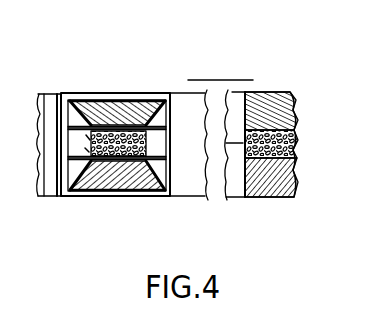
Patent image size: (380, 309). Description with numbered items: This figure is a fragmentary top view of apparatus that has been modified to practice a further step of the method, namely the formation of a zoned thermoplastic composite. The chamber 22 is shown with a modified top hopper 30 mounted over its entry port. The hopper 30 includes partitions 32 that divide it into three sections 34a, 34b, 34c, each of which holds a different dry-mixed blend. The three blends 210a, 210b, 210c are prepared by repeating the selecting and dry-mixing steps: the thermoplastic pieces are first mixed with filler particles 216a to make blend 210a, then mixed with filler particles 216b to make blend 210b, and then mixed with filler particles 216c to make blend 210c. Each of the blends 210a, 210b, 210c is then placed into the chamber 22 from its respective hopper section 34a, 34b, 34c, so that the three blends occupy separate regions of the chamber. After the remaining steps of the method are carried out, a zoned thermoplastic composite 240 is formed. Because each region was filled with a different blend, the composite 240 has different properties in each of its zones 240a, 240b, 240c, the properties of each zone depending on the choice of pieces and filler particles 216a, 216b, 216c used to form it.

The chamber 22 is at (303, 144).
The top hopper 30 is at (75, 201).
The partitions 32 is at (62, 130).
The hopper section 34a is at (163, 118).
The hopper section 34b is at (155, 141).
The hopper section 34c is at (155, 173).
The blend 210a is at (105, 118).
The blend 210b is at (96, 108).
The blend 210c is at (104, 170).
The filler particles 216a is at (148, 97).
The filler particles 216b is at (112, 127).
The filler particles 216c is at (141, 180).
The zoned thermoplastic composite 240 is at (308, 119).
The zone 240a is at (296, 105).
The zone 240b is at (298, 141).
The zone 240c is at (296, 180).